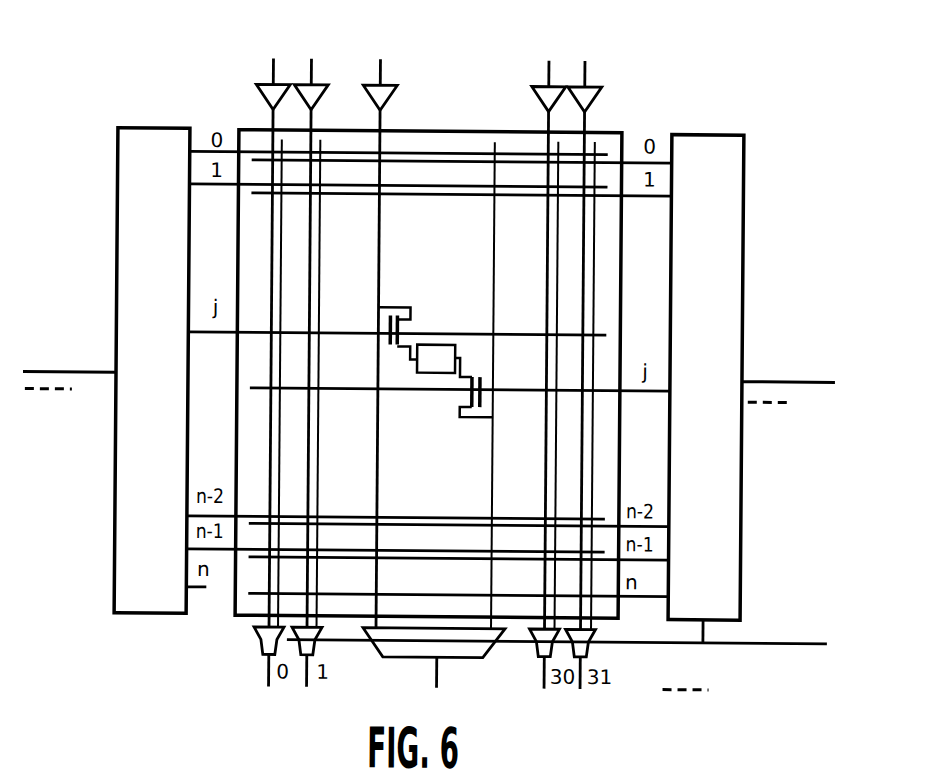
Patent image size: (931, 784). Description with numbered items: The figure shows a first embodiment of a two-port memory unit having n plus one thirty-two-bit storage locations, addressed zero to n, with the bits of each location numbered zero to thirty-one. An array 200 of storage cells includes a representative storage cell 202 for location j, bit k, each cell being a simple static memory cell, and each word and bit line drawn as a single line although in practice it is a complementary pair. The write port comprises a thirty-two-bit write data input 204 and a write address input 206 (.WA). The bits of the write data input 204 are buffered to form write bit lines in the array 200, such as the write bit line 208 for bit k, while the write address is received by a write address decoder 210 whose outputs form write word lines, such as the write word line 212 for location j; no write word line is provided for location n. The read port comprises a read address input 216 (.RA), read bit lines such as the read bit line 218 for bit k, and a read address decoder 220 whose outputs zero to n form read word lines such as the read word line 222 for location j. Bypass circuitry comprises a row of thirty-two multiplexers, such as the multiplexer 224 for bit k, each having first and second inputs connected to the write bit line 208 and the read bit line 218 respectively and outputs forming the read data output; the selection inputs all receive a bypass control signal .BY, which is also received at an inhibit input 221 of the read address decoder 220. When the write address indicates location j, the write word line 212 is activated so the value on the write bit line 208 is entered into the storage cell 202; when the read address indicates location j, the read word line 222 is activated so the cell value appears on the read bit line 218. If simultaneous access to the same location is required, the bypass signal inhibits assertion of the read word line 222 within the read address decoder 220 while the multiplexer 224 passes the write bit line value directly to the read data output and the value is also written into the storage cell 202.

The array 200 is at (242, 622).
The storage cell 202 is at (450, 343).
The write data input 204 is at (436, 68).
The write address input 206 is at (103, 374).
The write bit line 208 is at (377, 262).
The write address decoder 210 is at (116, 509).
The write word line 212 is at (340, 333).
The read address input 216 is at (751, 379).
The read bit line 218 is at (492, 452).
The read address decoder 220 is at (743, 498).
The inhibit input 221 is at (705, 634).
The read word line 222 is at (520, 393).
The multiplexer 224 is at (487, 649).